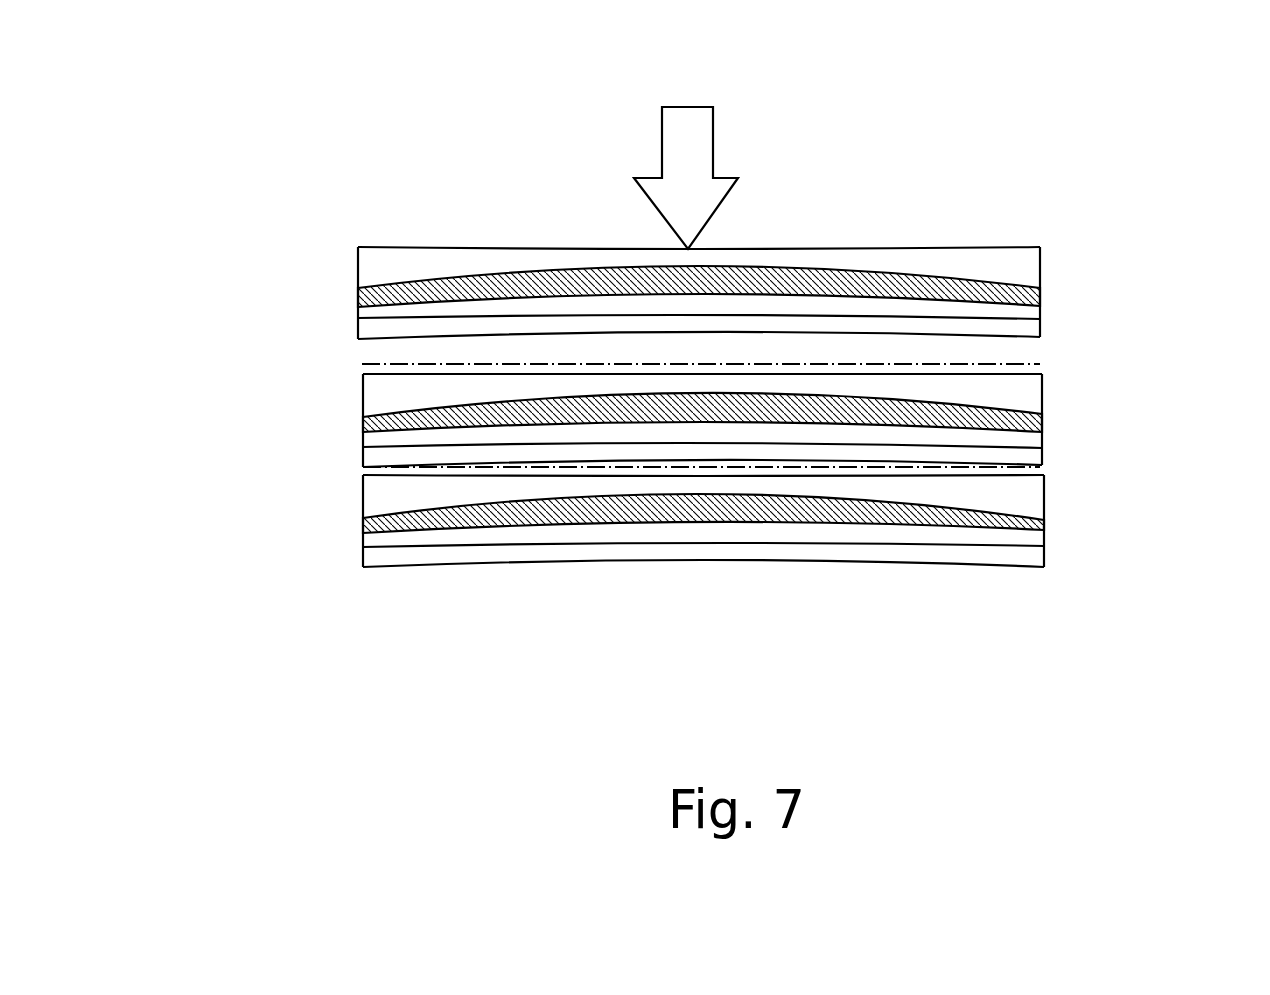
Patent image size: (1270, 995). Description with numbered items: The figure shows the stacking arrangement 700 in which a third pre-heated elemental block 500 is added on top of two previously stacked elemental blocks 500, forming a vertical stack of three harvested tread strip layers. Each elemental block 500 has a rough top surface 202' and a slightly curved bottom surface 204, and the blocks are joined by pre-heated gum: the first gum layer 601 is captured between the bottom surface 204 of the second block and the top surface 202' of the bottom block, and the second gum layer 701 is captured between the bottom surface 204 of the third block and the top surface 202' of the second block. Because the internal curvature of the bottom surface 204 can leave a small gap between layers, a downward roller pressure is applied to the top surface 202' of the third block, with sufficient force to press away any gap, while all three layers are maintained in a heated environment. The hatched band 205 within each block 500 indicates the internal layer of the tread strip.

The roller pressure application process 700 is at (462, 173).
The elemental block 500 is at (340, 304).
The top surface 202' is at (768, 364).
The adhesive layer 205 is at (1042, 292).
The bottom surface 204 is at (1042, 337).
The second gum layer 701 is at (362, 364).
The gum layer 601 is at (362, 465).